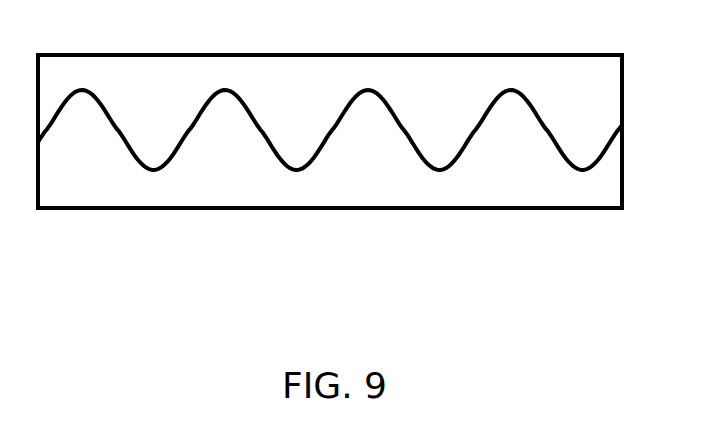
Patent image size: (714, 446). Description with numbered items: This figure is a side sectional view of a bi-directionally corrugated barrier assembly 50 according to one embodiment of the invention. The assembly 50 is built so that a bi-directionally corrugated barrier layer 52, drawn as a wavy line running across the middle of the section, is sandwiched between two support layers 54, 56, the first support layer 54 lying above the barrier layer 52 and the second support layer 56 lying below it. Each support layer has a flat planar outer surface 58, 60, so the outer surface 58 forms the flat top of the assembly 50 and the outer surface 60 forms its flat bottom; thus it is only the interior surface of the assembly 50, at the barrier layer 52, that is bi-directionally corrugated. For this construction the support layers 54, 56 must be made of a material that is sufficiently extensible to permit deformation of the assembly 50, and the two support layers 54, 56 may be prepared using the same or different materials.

The assembly 50 is at (212, 222).
The bi-directionally corrugated barrier layer 52 is at (470, 143).
The support layer 54 is at (478, 75).
The support layer 56 is at (85, 190).
The flat planar outer surface 58 is at (330, 55).
The flat planar outer surface 60 is at (350, 208).